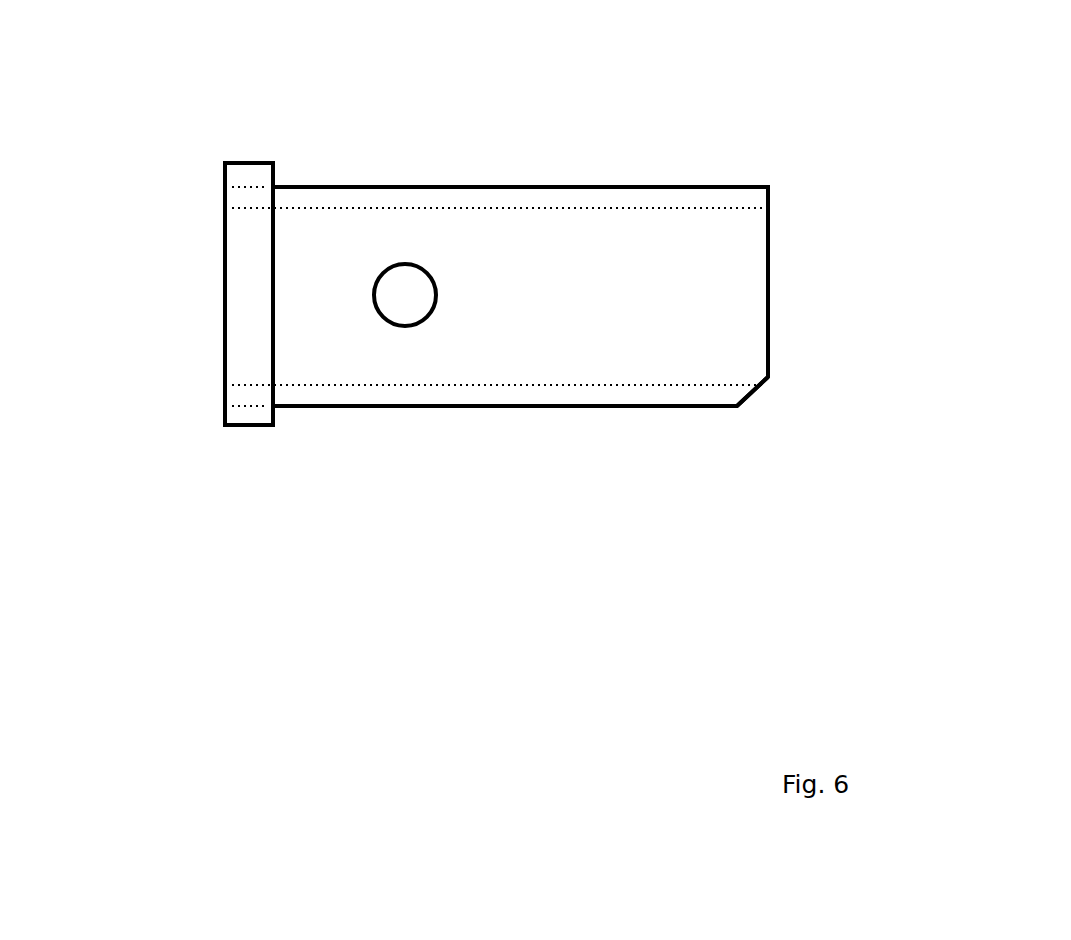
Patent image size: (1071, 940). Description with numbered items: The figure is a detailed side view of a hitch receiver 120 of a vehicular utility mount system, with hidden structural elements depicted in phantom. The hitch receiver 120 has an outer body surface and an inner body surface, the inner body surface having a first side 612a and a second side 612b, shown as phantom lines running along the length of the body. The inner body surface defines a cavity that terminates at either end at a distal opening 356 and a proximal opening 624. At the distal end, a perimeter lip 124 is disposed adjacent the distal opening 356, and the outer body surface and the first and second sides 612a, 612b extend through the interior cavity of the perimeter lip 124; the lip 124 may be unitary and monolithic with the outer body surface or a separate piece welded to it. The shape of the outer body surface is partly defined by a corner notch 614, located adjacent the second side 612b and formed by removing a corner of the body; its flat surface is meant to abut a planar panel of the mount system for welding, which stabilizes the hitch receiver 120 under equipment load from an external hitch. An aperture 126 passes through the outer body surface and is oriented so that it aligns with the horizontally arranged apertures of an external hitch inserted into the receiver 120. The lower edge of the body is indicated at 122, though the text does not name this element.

The hitch receiver 120 is at (256, 661).
The bottom edge of plate body 122 is at (558, 406).
The perimeter lip 124 is at (268, 163).
The aperture 126 is at (421, 266).
The distal opening 356 is at (218, 324).
The first side 612a is at (643, 210).
The second side 612b is at (438, 384).
The corner notch 614 is at (757, 392).
The proximal opening 624 is at (777, 271).